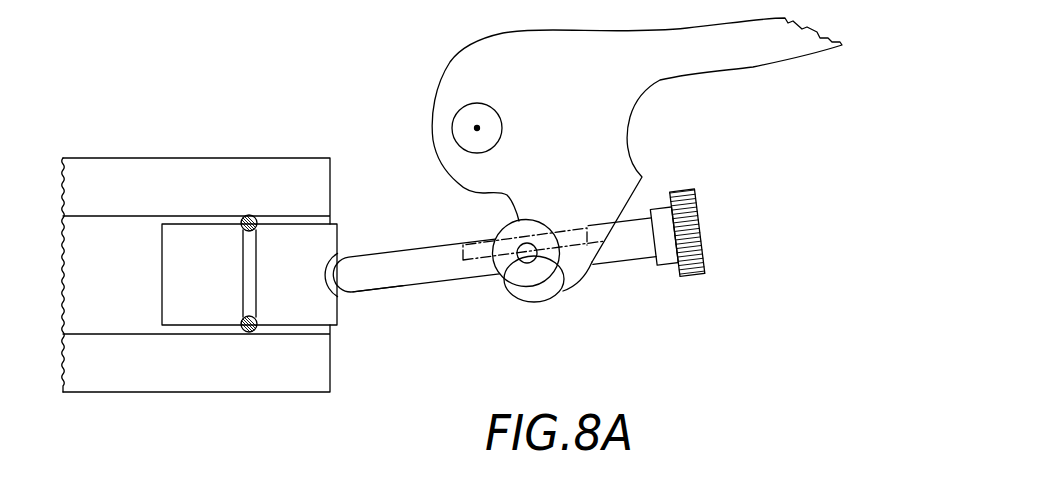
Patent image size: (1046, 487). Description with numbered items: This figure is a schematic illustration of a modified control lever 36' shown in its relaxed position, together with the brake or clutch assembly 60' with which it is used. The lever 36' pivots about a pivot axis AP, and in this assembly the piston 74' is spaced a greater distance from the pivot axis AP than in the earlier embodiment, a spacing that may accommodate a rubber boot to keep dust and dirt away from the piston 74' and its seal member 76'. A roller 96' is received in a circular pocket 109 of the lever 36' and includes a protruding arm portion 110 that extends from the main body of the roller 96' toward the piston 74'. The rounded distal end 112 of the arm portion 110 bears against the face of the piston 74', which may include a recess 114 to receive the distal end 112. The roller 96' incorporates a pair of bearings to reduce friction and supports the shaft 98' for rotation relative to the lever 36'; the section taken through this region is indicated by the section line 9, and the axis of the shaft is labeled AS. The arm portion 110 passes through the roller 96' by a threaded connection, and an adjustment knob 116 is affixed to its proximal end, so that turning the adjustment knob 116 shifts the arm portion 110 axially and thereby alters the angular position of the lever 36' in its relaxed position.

The brake or clutch assembly 60' is at (196, 233).
The piston 74' is at (222, 274).
The seal member 76' is at (217, 300).
The recess 114 is at (322, 259).
The arm portion 110 is at (368, 256).
The distal end 112 is at (336, 283).
The roller 96' is at (486, 240).
The circular pocket 109 is at (535, 220).
The shaft 98' is at (518, 298).
The lever 36' is at (637, 140).
The adjustment knob 116 is at (700, 212).
The pivot axis AP is at (478, 127).
The spring axis AS is at (570, 296).
The section line 9- 9 is at (520, 231).